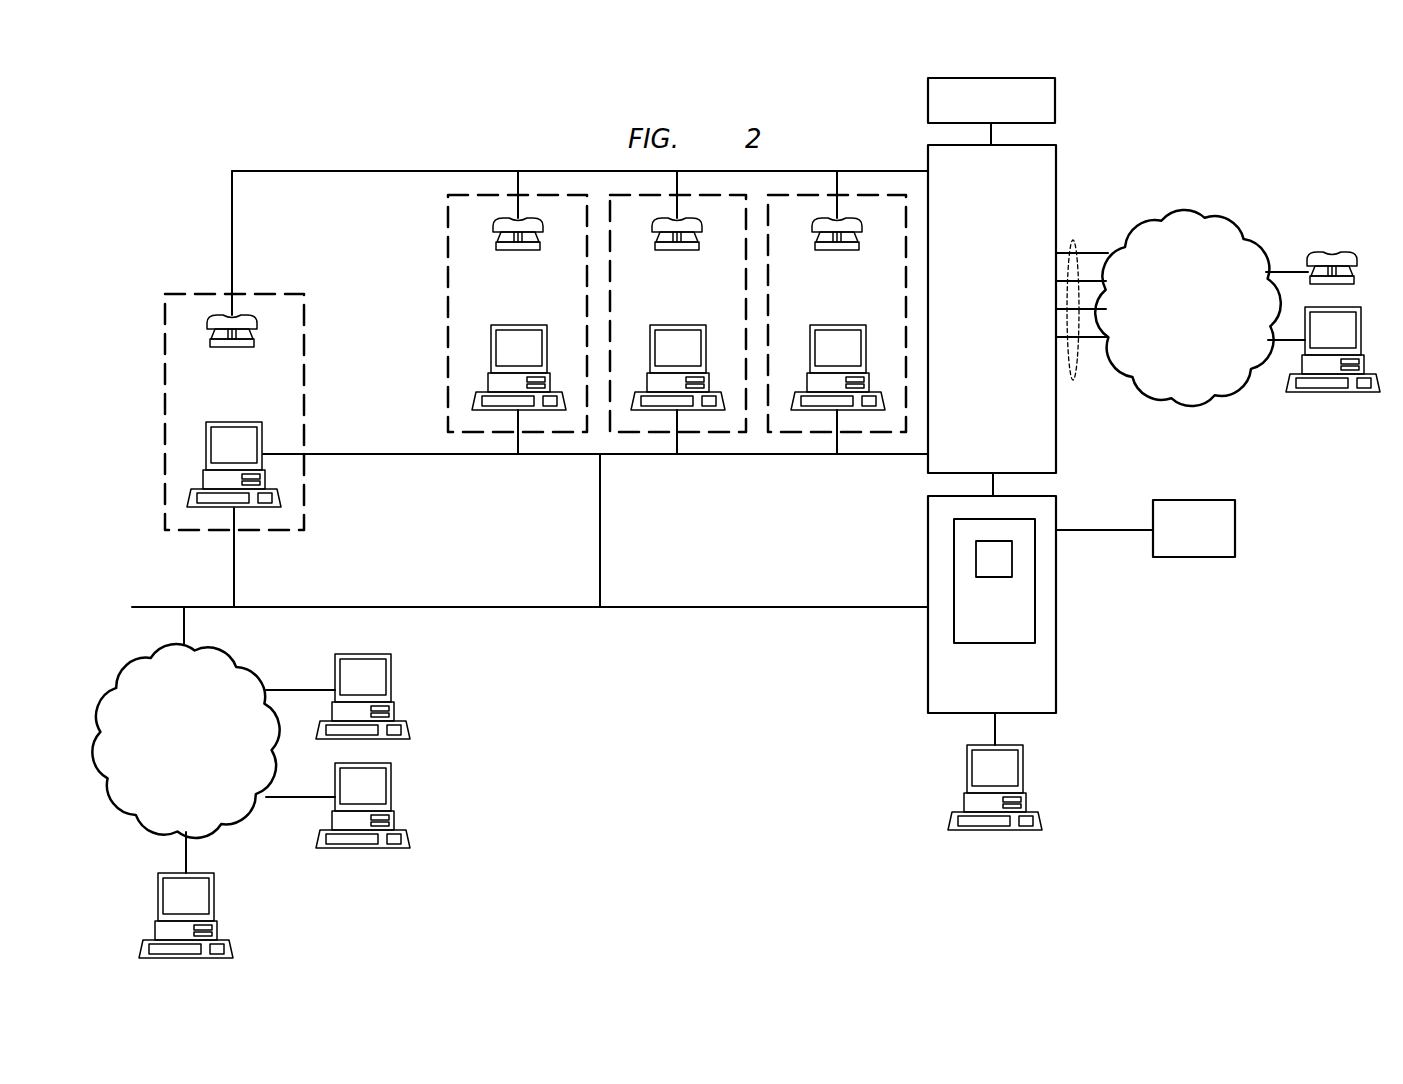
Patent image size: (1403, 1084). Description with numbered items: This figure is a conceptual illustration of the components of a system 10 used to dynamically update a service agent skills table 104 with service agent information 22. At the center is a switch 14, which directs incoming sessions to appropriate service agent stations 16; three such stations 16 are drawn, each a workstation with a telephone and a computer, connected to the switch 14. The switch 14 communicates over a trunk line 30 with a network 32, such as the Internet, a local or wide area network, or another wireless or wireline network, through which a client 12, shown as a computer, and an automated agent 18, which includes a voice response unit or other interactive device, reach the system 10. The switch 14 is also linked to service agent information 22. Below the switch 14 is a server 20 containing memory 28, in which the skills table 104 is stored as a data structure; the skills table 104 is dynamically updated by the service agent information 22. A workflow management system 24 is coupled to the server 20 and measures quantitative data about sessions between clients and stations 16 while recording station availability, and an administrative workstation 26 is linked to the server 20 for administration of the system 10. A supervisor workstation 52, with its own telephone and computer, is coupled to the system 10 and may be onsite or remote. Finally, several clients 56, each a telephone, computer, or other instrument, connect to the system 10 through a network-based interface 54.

The system 10 is at (1152, 150).
The client 12 is at (1348, 393).
The switch 14 is at (977, 324).
The service agent station 16 is at (504, 299).
The automated agent 18 is at (1335, 251).
The server 20 is at (1057, 603).
The service agent information 22 is at (1056, 97).
The workflow management system 24 is at (1236, 540).
The administrative workstation 26 is at (1026, 780).
The memory 28 is at (995, 644).
The trunk line 30 is at (1073, 242).
The network 32 is at (1173, 319).
The supervisor workstation 52 is at (218, 397).
The network-based interface 54 is at (171, 754).
The client 56 is at (393, 685).
The skills table 104 is at (994, 578).